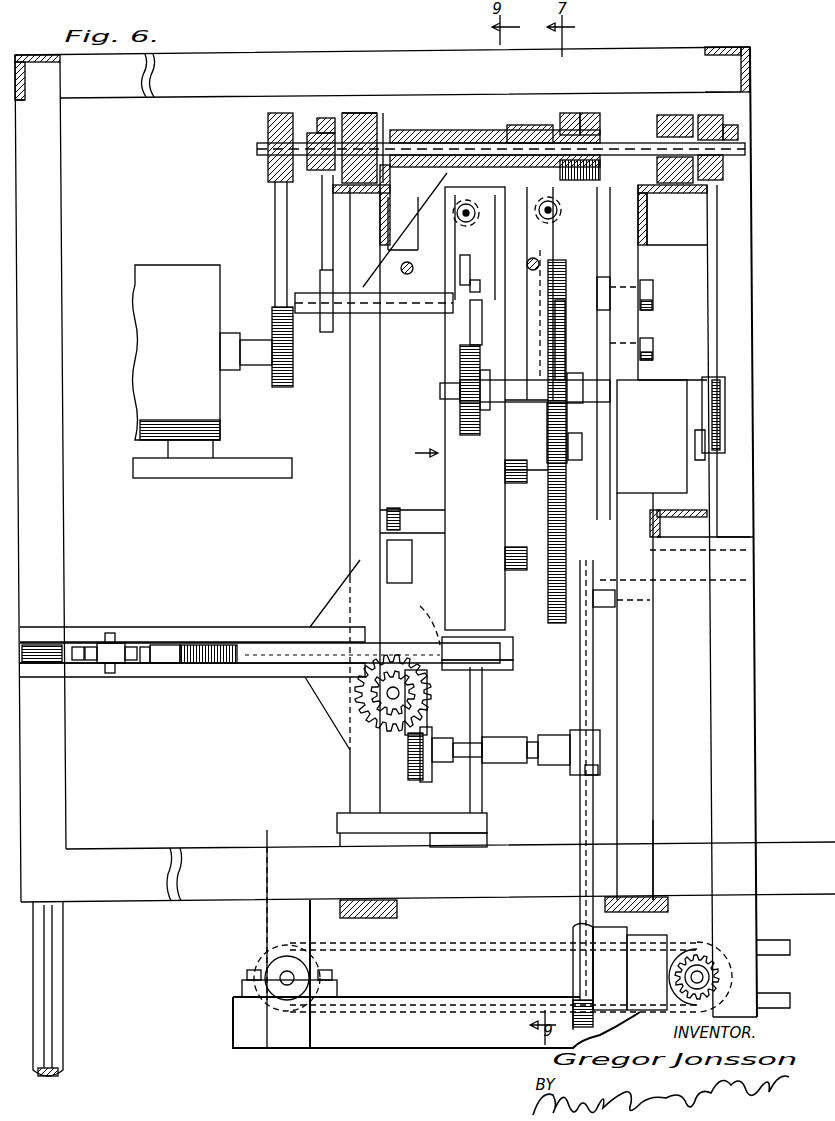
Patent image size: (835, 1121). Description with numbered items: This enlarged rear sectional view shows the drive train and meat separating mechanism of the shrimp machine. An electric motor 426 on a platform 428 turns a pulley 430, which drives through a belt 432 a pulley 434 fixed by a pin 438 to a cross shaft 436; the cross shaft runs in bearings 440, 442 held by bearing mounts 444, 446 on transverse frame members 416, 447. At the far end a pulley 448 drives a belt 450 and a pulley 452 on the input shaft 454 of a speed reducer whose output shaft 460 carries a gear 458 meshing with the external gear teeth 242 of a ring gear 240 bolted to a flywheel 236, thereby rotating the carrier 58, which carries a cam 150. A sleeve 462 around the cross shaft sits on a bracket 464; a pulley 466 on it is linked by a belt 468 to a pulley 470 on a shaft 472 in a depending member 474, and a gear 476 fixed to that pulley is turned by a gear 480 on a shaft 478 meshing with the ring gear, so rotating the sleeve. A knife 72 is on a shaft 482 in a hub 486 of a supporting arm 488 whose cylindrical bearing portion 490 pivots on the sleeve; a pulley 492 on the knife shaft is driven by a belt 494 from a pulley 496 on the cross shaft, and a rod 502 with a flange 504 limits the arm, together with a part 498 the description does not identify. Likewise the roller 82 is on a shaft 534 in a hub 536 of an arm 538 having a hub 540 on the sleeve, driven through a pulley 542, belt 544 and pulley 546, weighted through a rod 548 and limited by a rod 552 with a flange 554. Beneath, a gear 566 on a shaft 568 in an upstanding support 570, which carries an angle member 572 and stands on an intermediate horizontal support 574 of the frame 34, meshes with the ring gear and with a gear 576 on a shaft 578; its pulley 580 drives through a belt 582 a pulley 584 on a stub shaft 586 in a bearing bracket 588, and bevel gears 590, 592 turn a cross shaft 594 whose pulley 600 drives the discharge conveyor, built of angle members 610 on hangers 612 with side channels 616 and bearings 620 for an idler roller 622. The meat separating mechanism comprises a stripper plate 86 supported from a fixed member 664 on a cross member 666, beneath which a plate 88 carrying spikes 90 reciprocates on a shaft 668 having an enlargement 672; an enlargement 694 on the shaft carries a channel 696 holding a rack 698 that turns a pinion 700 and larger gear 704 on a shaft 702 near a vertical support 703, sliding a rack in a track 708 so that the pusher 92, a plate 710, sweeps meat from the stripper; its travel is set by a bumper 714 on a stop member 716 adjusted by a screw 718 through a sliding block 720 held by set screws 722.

The frame 34 is at (720, 530).
The carrier 58 is at (355, 450).
The knife 72 is at (452, 271).
The roller 82 is at (478, 372).
The stripper plate 86 is at (505, 665).
The spike carrying plate 88 is at (500, 745).
The spikes 90 is at (480, 715).
The pusher 92 is at (417, 618).
The cam 150 is at (360, 560).
The flywheel 236 is at (530, 487).
The ring gear 240 is at (613, 436).
The external gear teeth 242 is at (547, 408).
The transverse frame member 416 is at (278, 198).
The electric motor 426 is at (165, 265).
The platform 428 is at (248, 470).
The pulley 430 is at (240, 332).
The belt 432 is at (280, 231).
The pulley 434 is at (268, 128).
The cross shaft 436 is at (383, 140).
The pin 438 is at (318, 128).
The bearing 440 is at (358, 118).
The bearing 442 is at (660, 138).
The bearing mount 444 is at (365, 115).
The bearing mount 446 is at (670, 117).
The transverse frame member 447 is at (720, 190).
The pulley 448 is at (735, 130).
The belt 450 is at (700, 240).
The pulley 452 is at (725, 400).
The input shaft 454 is at (705, 447).
The gear 458 is at (532, 477).
The output shaft 460 is at (582, 450).
The sleeve 462 is at (450, 128).
The bracket 464 is at (390, 128).
The pulley 466 is at (573, 115).
The belt 468 is at (560, 192).
The pulley 470 is at (600, 252).
The shaft 472 is at (720, 265).
The depending member 474 is at (600, 250).
The gear 476 is at (540, 320).
The shaft 478 is at (605, 345).
The gear 480 is at (555, 330).
The shaft 482 is at (295, 300).
The hub 486 is at (293, 345).
The supporting arm 488 is at (466, 204).
The cylindrical bearing portion 490 is at (443, 130).
The pulley 492 is at (325, 325).
The belt 494 is at (323, 206).
The pulley 496 is at (312, 135).
The bearing 498 is at (470, 320).
The rod 502 is at (467, 270).
The flange 504 is at (410, 264).
The shaft 534 is at (460, 391).
The hub 536 is at (470, 420).
The arm 538 is at (478, 345).
The hub 540 is at (535, 125).
The pulley 542 is at (590, 410).
The belt 544 is at (615, 320).
The pulley 546 is at (590, 117).
The rod 548 is at (535, 258).
The rod 552 is at (548, 200).
The flange 554 is at (548, 210).
The gear 566 is at (500, 535).
The shaft 568 is at (754, 556).
The upstanding support 570 is at (653, 640).
The horizontal angle member 572 is at (700, 512).
The intermediate horizontal support 574 is at (672, 835).
The gear 576 is at (558, 625).
The shaft 578 is at (754, 581).
The pulley 580 is at (615, 612).
The belt 582 is at (593, 680).
The pulley 584 is at (570, 925).
The stub shaft 586 is at (590, 1005).
The bearing bracket 588 is at (670, 965).
The bevel gear 590 is at (697, 967).
The bevel gear 592 is at (707, 985).
The cross shaft 594 is at (707, 975).
The pulley 600 is at (758, 982).
The angle members 610 is at (385, 1045).
The hangers 612 is at (280, 925).
The channels 616 is at (440, 980).
The bearings 620 is at (260, 975).
The idler roller 622 is at (320, 968).
The fixed member 664 is at (455, 835).
The cross member 666 is at (345, 818).
The shaft 668 is at (528, 770).
The enlargement 672 is at (570, 750).
The enlargement 694 is at (430, 830).
The channel 696 is at (410, 760).
The rack 698 is at (405, 765).
The pinion 700 is at (377, 710).
The shaft 702 is at (382, 697).
The vertical support 703 is at (360, 500).
The larger gear 704 is at (353, 685).
The track 708 is at (175, 677).
The pusher plate 710 is at (512, 640).
The bumper 714 is at (160, 648).
The stop member 716 is at (143, 648).
The screw 718 is at (80, 647).
The sliding block 720 is at (110, 668).
The set screws 722 is at (110, 645).